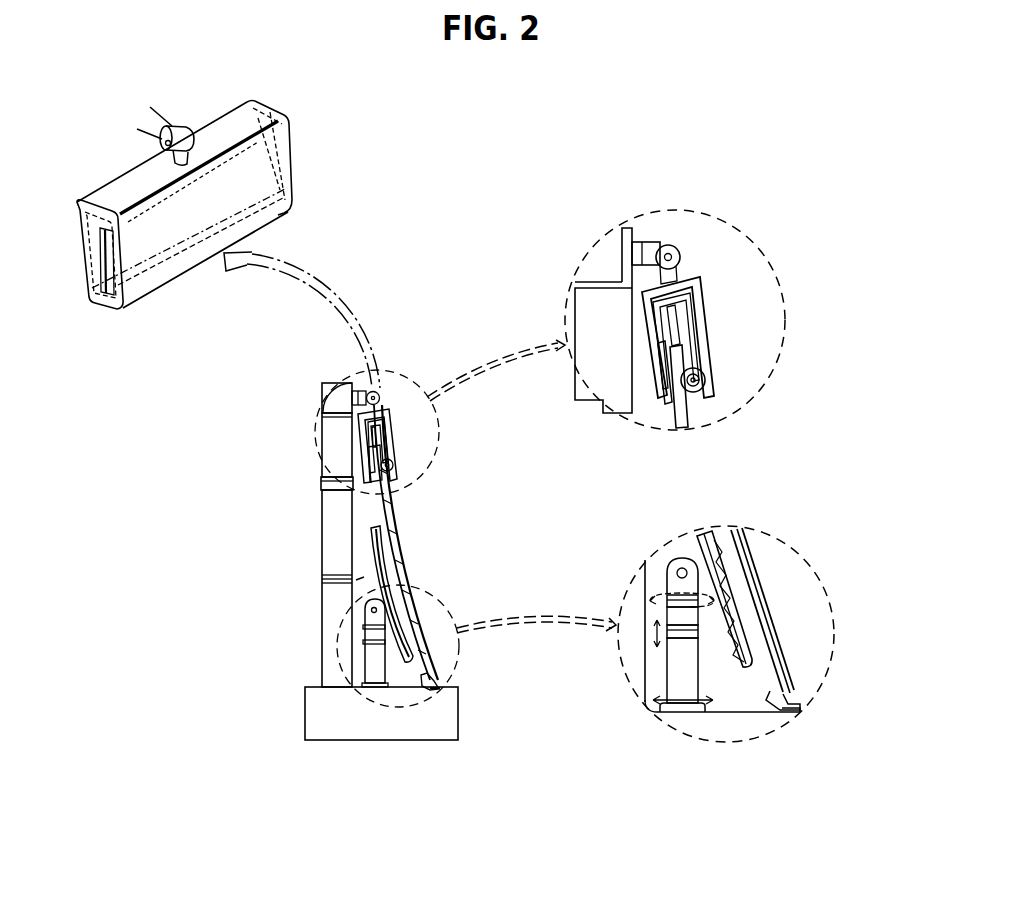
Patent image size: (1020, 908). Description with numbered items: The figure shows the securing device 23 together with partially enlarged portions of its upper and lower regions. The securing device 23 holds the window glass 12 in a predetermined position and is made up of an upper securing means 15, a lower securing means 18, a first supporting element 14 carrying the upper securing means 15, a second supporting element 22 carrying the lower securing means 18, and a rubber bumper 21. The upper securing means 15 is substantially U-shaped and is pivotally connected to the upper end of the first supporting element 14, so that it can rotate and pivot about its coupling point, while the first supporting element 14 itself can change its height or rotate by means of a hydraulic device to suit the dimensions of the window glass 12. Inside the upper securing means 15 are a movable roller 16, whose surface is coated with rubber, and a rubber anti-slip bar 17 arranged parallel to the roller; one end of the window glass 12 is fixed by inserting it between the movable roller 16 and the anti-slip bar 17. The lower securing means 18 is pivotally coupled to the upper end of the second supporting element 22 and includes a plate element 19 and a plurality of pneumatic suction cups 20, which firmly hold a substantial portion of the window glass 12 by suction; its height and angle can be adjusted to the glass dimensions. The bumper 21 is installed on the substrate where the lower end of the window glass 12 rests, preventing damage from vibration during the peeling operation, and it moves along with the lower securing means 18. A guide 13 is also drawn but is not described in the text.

The window glass 12 is at (352, 507).
The guide bar 13 is at (398, 569).
The first supporting element 14 is at (337, 448).
The upper securing means 15 is at (178, 289).
The movable roller 16 is at (233, 212).
The anti-slip bar 17 is at (100, 300).
The lower securing means 18 is at (362, 578).
The plate element 19 is at (407, 665).
The pneumatic suction cups 20 is at (722, 545).
The bumper 21 is at (434, 688).
The second supporting element 22 is at (367, 659).
The securing device 23 is at (413, 537).